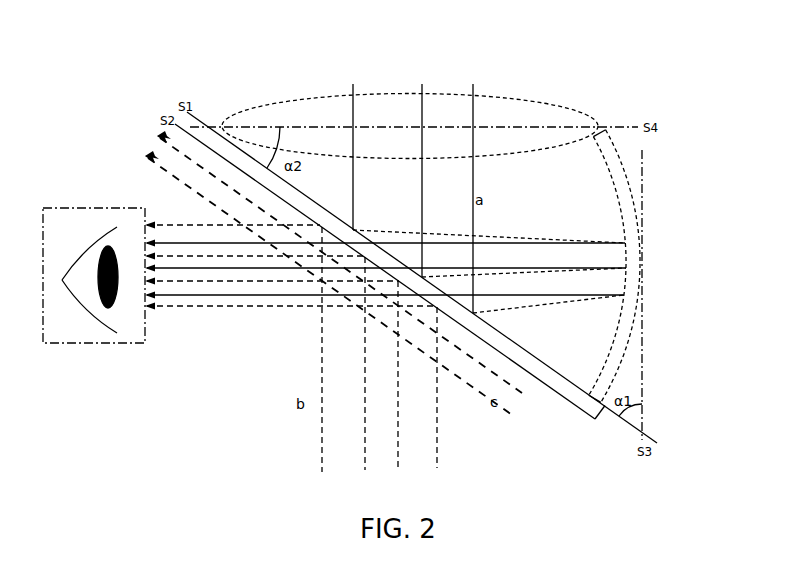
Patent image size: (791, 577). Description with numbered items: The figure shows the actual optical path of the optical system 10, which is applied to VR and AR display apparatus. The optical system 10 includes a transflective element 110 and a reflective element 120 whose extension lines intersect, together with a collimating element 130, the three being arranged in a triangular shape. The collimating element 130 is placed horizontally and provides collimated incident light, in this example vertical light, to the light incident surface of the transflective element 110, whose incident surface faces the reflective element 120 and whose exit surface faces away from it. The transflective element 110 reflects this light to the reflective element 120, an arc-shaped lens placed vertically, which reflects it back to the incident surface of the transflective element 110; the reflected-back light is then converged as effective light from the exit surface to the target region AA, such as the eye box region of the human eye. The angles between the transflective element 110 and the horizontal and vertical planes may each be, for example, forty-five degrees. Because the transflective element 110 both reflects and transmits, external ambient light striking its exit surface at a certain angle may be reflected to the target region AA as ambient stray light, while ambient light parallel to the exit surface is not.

The optical system 10 is at (76, 77).
The transflective element 110 is at (562, 384).
The reflective element 120 is at (622, 190).
The collimating element 130 is at (568, 123).
The target region AA is at (83, 344).